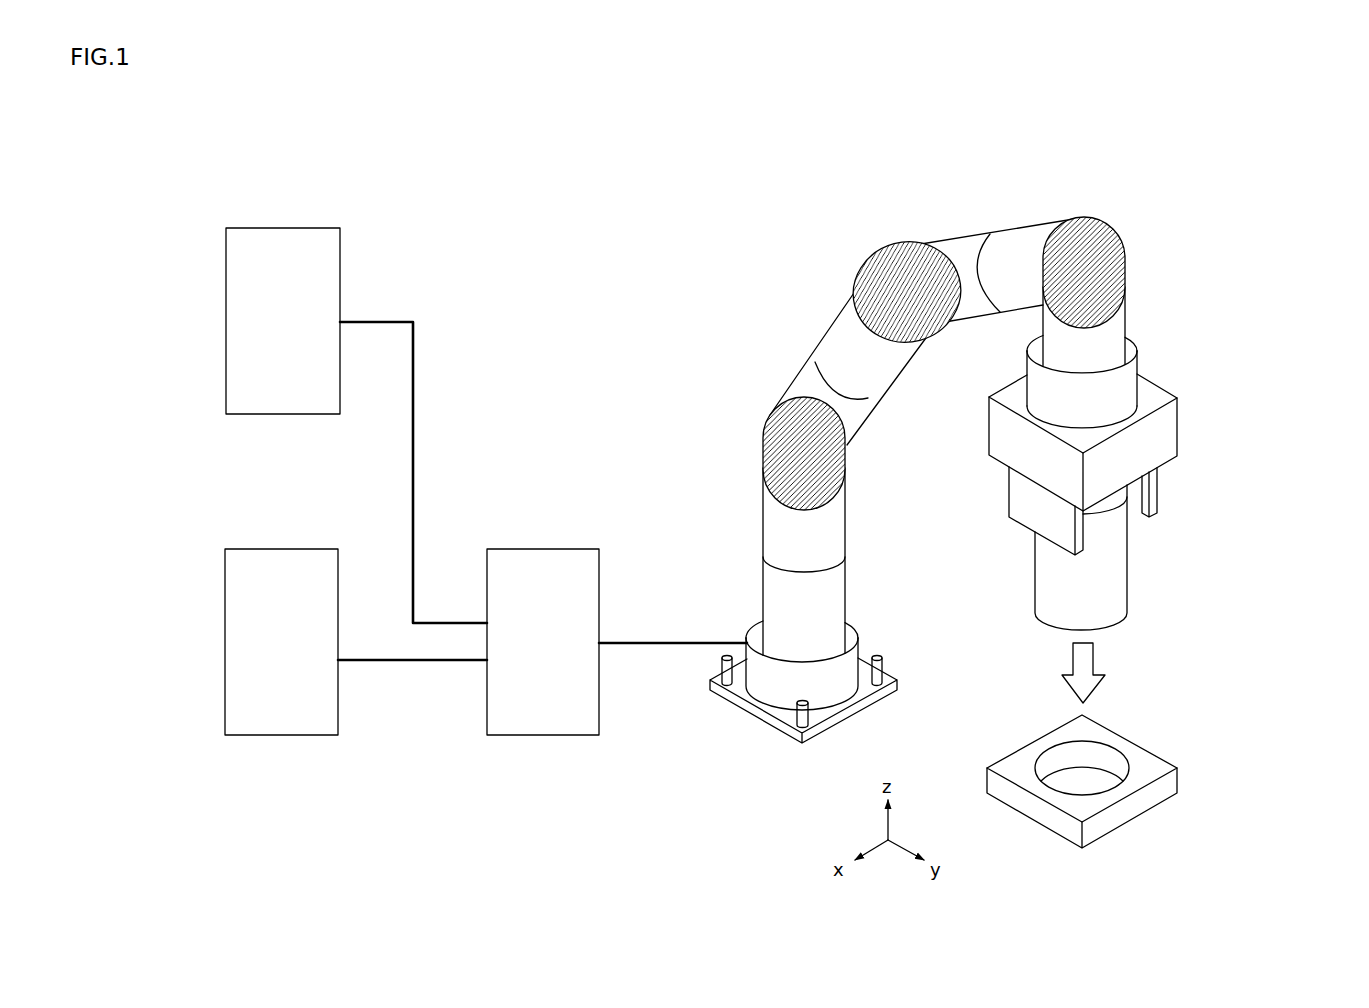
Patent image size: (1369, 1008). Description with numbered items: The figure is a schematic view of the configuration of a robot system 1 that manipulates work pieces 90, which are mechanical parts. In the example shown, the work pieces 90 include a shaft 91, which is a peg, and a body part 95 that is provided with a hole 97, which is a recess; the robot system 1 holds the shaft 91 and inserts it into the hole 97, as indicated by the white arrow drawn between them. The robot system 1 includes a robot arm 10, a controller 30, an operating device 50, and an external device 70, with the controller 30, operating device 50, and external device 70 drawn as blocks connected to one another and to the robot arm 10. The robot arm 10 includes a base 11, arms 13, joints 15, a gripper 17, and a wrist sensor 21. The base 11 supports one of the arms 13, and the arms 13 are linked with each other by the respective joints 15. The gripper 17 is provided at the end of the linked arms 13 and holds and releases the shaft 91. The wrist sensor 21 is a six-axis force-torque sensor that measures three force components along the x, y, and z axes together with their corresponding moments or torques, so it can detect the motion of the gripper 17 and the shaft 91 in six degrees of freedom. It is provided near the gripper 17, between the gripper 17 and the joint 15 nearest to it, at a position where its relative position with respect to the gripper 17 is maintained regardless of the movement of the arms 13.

The robot system 1 is at (440, 150).
The robot arm 10 is at (708, 233).
The base 11 is at (757, 636).
The arms 13 is at (787, 537).
The joints 15 is at (785, 447).
The gripper 17 is at (1037, 508).
The wrist sensor 21 is at (1122, 389).
The controller 30 is at (535, 540).
The operating device 50 is at (279, 220).
The external device 70 is at (281, 540).
The work pieces 90 is at (1162, 666).
The shaft 91 is at (1140, 602).
The body part 95 is at (1135, 763).
The hole 97 is at (1057, 762).